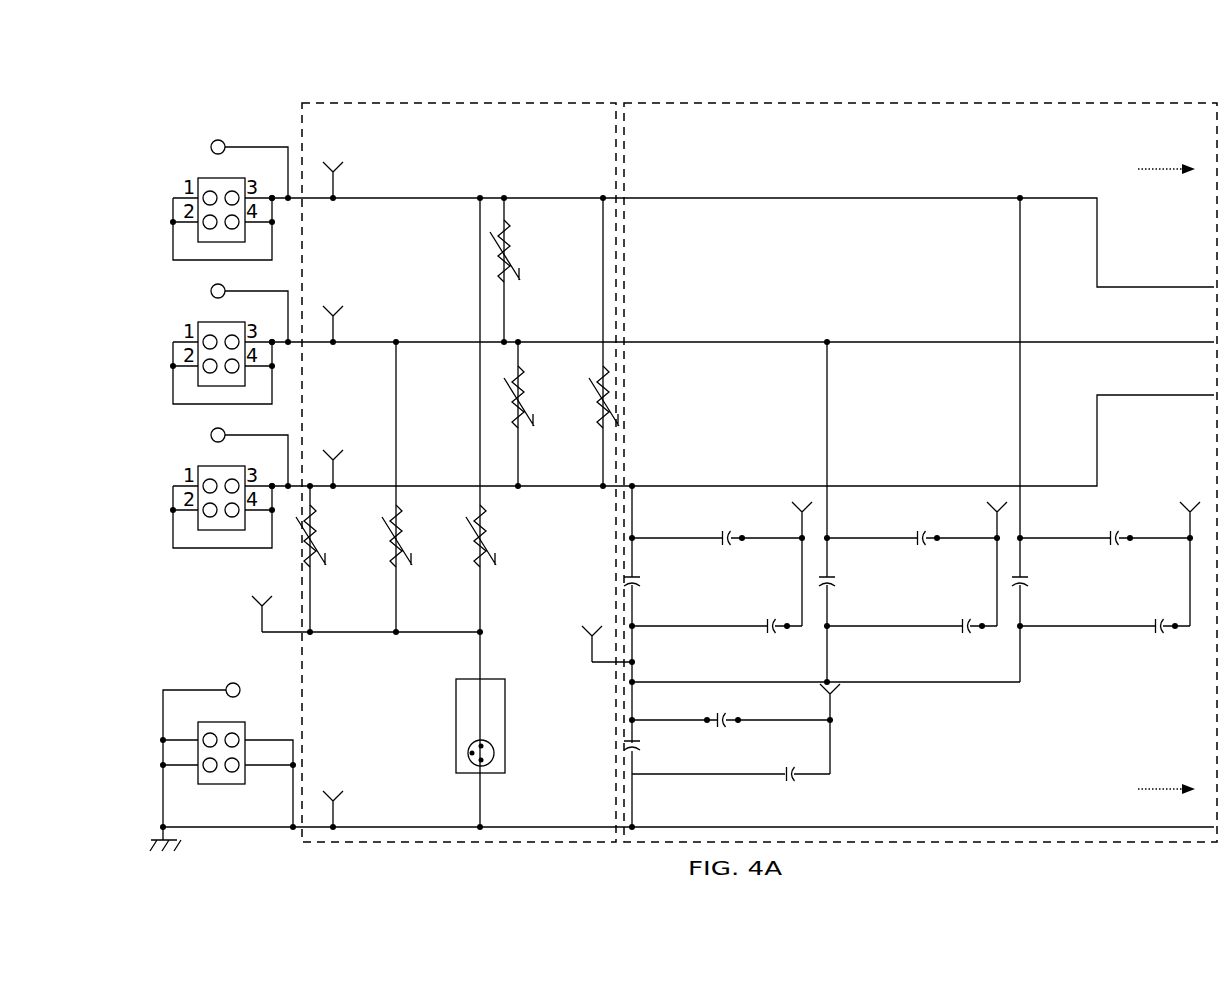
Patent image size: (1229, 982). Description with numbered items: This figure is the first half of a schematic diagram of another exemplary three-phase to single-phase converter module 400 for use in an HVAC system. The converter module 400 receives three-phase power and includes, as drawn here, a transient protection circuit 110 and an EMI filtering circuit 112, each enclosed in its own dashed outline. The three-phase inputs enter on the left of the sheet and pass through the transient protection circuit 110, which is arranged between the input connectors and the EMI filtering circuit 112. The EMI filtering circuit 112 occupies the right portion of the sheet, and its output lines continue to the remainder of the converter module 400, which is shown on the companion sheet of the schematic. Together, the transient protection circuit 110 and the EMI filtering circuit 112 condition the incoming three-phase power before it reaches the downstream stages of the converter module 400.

The three-phase to single-phase converter module 400 is at (188, 102).
The transient protection circuit 110 is at (420, 98).
The EMI filtering circuit 112 is at (695, 102).